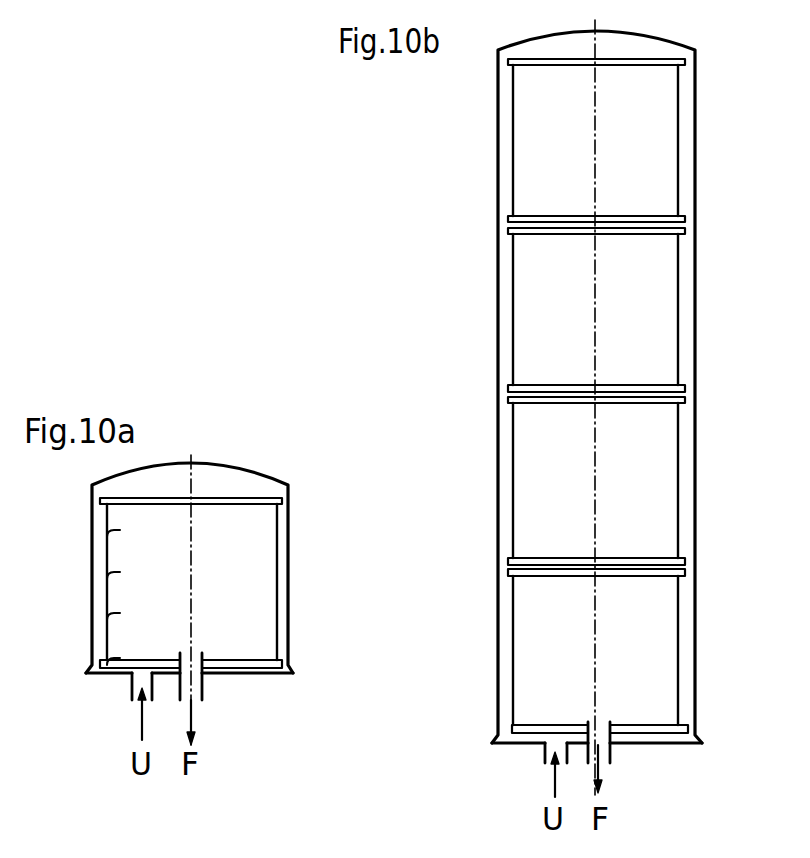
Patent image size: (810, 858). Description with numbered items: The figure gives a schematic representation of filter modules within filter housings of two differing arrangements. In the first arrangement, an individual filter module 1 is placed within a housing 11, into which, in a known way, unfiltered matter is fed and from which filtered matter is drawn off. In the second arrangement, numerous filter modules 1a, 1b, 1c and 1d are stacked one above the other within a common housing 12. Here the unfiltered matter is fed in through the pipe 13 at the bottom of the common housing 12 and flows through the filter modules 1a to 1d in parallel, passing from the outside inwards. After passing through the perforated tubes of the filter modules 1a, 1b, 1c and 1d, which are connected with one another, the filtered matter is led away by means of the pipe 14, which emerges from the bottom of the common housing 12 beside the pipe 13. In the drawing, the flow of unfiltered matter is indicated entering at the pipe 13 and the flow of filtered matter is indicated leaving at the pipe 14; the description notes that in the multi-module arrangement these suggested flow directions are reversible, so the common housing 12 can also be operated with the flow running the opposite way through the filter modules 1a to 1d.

In FIG. 10A, the filter module 1 is at (191, 583).
In FIG. 10B, the filter module 1a is at (596, 140).
In FIG. 10B, the filter module 1b is at (596, 310).
In FIG. 10B, the filter module 1c is at (596, 481).
In FIG. 10B, the filter module 1d is at (598, 651).
In FIG. 10A, the housing 11 is at (289, 532).
In FIG. 10B, the common housing 12 is at (697, 535).
In FIG. 10B, the pipe 13 is at (545, 757).
In FIG. 10B, the pipe 14 is at (612, 757).